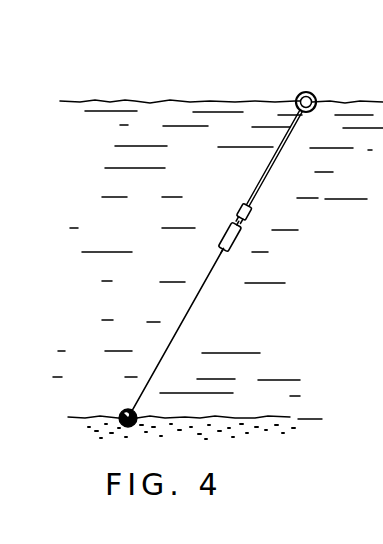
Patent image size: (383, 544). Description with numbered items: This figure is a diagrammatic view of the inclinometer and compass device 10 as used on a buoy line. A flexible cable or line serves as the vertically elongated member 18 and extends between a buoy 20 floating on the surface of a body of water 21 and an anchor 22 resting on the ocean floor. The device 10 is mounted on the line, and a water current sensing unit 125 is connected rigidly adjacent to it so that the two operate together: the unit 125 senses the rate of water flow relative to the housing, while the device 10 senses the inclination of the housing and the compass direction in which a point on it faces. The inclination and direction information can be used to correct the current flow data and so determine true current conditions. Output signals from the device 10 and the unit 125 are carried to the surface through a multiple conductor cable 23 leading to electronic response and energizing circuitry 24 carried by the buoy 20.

The unit 10 is at (244, 242).
The vertically elongated member 18 is at (190, 313).
The buoy 20 is at (317, 97).
The body of water 21 is at (113, 106).
The anchor 22 is at (123, 411).
The multiple conductor cable 23 is at (263, 173).
The electronic response and energizing circuitry 24 is at (296, 98).
The water current sensing unit 125 is at (251, 214).